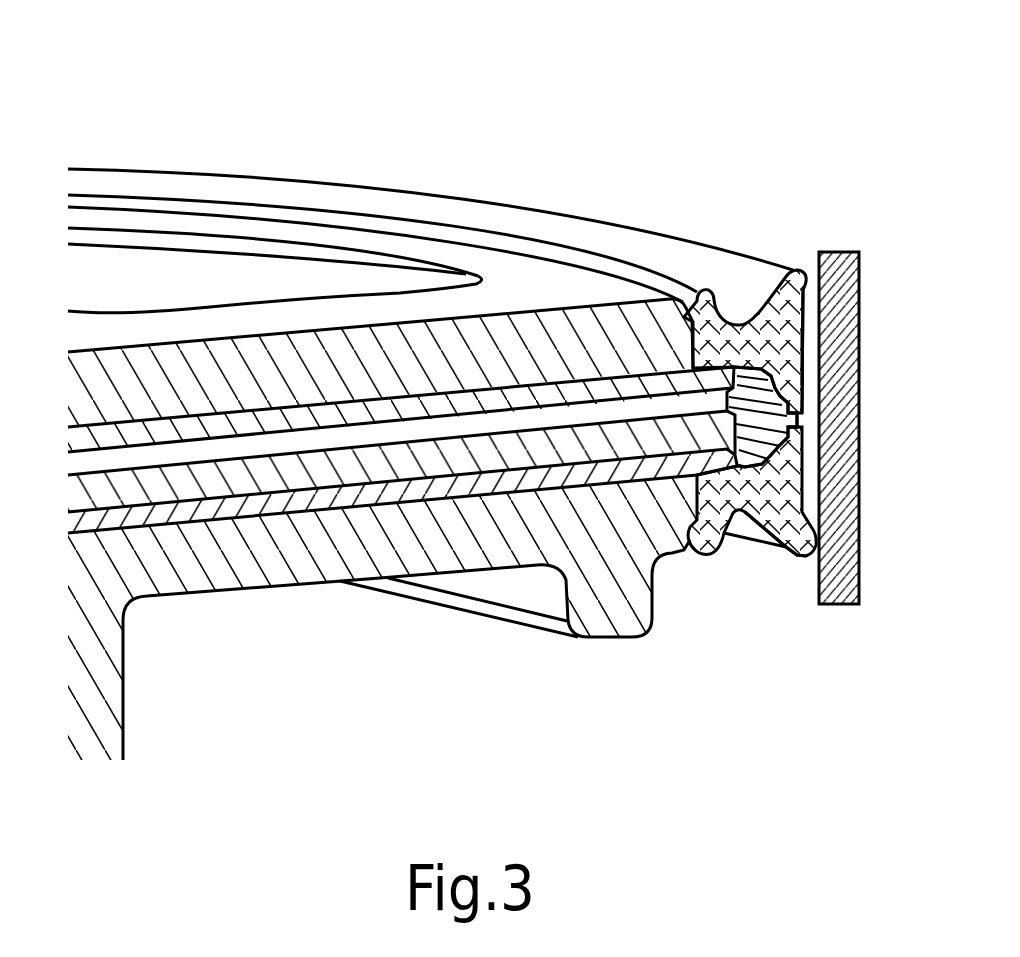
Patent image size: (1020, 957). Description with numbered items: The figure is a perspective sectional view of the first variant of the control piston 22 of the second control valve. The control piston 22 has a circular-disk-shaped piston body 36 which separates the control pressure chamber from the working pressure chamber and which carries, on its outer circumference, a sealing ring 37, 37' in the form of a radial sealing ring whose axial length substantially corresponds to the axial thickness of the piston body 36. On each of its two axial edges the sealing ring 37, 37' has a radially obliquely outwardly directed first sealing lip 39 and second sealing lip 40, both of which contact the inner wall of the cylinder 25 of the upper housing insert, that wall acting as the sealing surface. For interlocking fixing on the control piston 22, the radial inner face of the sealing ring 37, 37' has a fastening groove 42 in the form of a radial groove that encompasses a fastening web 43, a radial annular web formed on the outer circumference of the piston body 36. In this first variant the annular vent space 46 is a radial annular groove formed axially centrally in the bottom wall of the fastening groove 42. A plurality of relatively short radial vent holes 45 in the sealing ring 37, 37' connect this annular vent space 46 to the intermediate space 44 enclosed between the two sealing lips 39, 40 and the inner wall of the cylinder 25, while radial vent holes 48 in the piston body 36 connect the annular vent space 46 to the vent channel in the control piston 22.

The control piston 22 is at (432, 386).
The cylinder 25 is at (847, 482).
The piston body 36 is at (530, 293).
The sealing ring 37 is at (739, 284).
The sealing ring 37' is at (752, 491).
The first sealing lip 39 is at (805, 272).
The second sealing lip 40 is at (803, 556).
The fastening groove 42 is at (759, 443).
The fastening web 43 is at (710, 432).
The intermediate space 44 is at (808, 355).
The radial vent holes 45 is at (799, 424).
The annular vent space 46 is at (753, 408).
The radial vent holes 48 is at (318, 440).